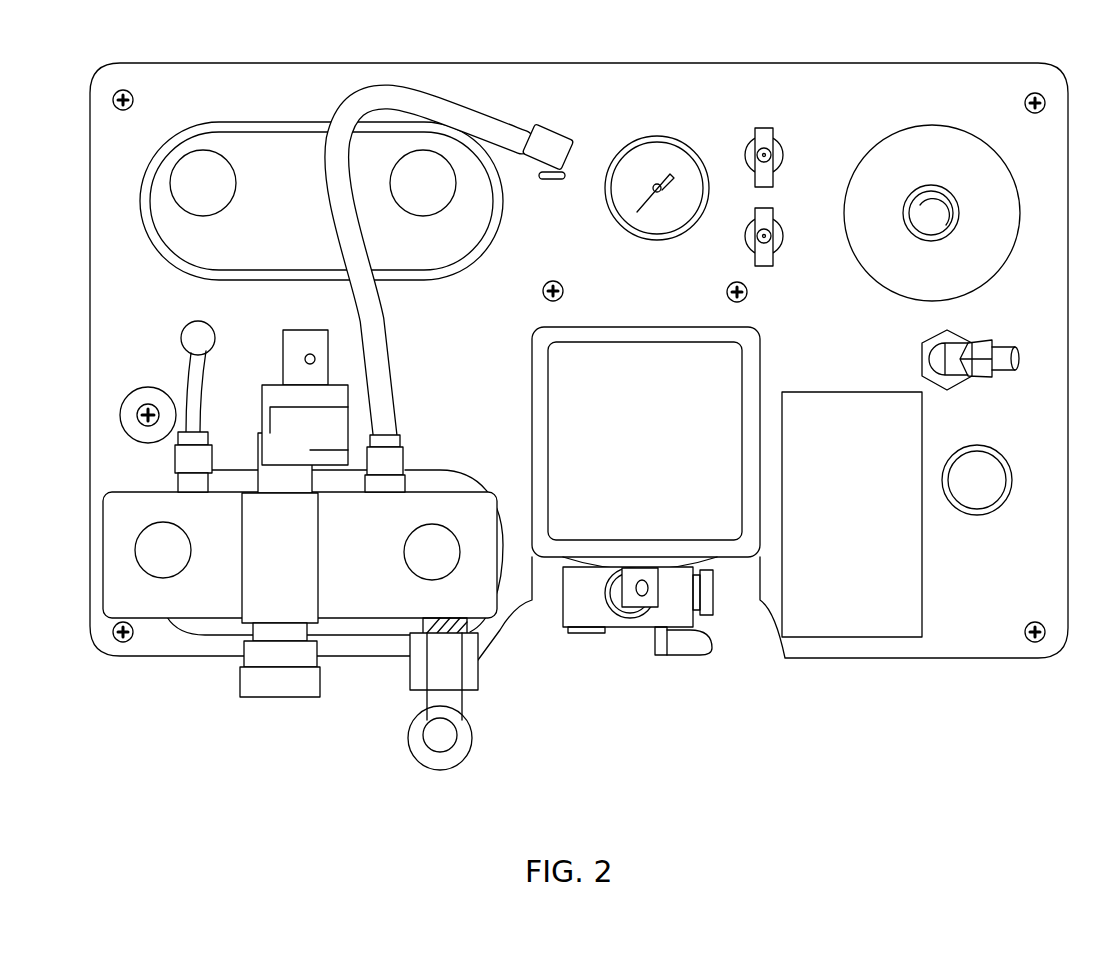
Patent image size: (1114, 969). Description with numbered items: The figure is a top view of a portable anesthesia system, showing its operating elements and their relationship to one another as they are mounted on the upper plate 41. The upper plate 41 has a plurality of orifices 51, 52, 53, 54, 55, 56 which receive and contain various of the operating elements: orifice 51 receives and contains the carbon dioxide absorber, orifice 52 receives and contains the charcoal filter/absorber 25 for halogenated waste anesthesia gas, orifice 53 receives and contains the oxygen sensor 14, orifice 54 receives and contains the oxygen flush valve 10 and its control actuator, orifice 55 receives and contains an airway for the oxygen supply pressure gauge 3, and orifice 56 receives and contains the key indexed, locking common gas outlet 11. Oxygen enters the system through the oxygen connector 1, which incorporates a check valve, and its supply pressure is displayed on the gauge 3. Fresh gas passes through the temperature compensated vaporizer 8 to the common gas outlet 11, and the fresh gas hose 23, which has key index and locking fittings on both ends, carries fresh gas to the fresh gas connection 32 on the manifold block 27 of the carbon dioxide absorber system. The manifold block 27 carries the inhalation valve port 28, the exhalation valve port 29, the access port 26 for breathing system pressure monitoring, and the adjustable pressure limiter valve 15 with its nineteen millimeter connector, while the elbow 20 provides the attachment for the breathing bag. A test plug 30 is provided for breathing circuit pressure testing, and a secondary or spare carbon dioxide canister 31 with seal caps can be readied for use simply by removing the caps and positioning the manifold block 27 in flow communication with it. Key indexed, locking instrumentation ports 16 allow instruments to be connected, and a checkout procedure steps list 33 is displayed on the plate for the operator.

The oxygen connector with check valve 1 is at (1022, 358).
The oxygen supply pressure gauge 3 is at (660, 160).
The vaporizer 8 is at (574, 518).
The oxygen flush valve 10 is at (990, 470).
The common gas outlet 11 is at (548, 185).
The oxygen sensor 14 is at (323, 415).
The adjustable pressure limiter (APL) valve 15 is at (255, 572).
The instrumentation ports 16 is at (764, 140).
The elbow for breathing bag 20 is at (442, 742).
The fresh gas hose 23 is at (398, 95).
The filter/absorber for waste anesthesia gas 25 is at (931, 188).
The access port for breathing system pressure monitoring 26 is at (188, 455).
The manifold block 27 is at (117, 553).
The inhalation valve port 28 is at (163, 547).
The exhalation valve port 29 is at (417, 549).
The test plug 30 is at (122, 410).
The secondary (spare) CO2 canister 31 is at (262, 153).
The fresh gas connection to manifold block 32 is at (403, 440).
The checkout procedure steps list 33 is at (847, 612).
The upper plate 41 is at (494, 335).
The orifice 51 is at (197, 645).
The orifice 52 is at (1004, 160).
The orifice 53 is at (140, 388).
The orifice 54 is at (1000, 511).
The orifice 55 is at (703, 168).
The orifice 56 is at (565, 152).